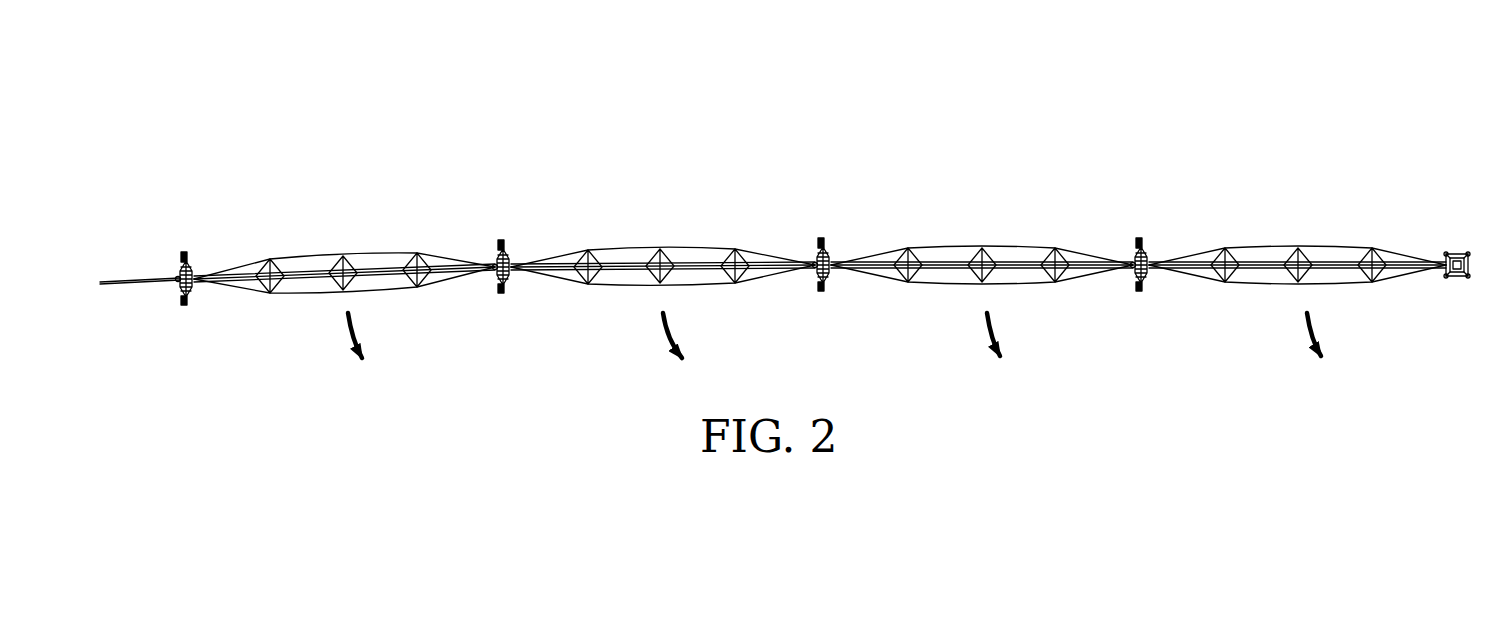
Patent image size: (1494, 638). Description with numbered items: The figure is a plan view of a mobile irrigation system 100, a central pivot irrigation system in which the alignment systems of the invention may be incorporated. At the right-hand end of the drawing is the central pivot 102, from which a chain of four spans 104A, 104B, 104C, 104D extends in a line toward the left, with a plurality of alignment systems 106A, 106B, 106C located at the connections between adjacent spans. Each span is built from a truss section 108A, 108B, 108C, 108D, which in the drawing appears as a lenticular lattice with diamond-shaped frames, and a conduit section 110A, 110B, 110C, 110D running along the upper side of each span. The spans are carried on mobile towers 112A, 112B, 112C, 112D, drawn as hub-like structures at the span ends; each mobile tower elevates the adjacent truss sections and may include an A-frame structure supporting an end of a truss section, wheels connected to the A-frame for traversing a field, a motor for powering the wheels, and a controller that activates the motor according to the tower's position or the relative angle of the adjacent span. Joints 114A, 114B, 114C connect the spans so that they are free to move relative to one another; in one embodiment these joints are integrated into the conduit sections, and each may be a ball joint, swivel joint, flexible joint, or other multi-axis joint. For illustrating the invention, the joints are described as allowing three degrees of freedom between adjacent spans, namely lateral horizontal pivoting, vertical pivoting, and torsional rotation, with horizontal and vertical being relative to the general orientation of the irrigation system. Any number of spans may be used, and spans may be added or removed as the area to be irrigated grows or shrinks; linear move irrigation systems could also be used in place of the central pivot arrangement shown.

The mobile irrigation system 100 is at (887, 126).
The central pivot 102 is at (1446, 250).
The span 104A is at (1318, 238).
The span 104B is at (1000, 238).
The span 104C is at (680, 238).
The span 104D is at (360, 238).
The alignment system 106A is at (1129, 246).
The alignment system 106B is at (811, 246).
The alignment system 106C is at (490, 246).
The truss section 108A is at (1270, 289).
The truss section 108B is at (1008, 289).
The truss section 108C is at (640, 290).
The truss section 108D is at (373, 291).
The conduit section 110A is at (1253, 248).
The conduit section 110B is at (937, 248).
The conduit section 110C is at (619, 246).
The conduit section 110D is at (302, 248).
The mobile tower 112A is at (1147, 301).
The mobile tower 112B is at (830, 302).
The mobile tower 112C is at (510, 304).
The mobile tower 112D is at (192, 305).
The joint 114A is at (1122, 247).
The joint 114B is at (802, 247).
The joint 114C is at (481, 247).